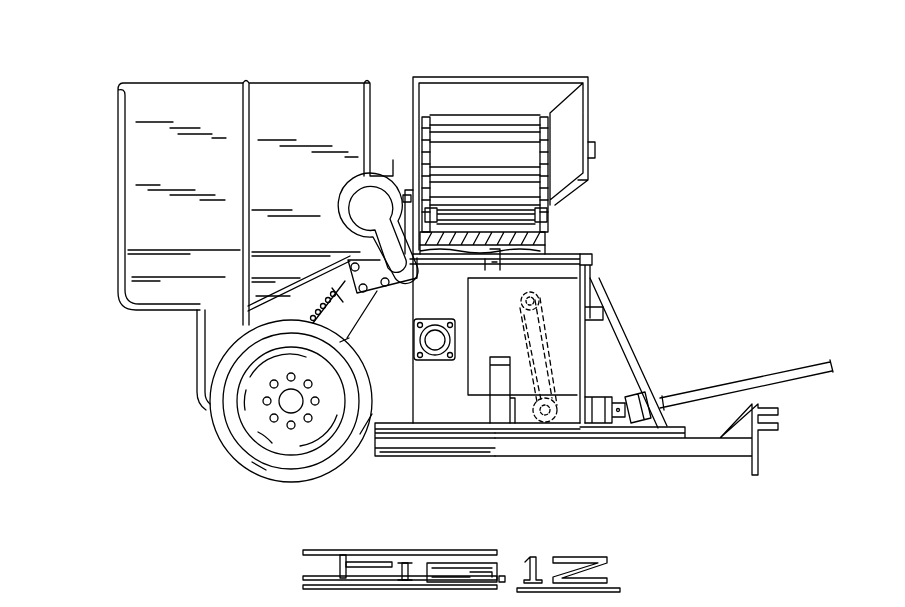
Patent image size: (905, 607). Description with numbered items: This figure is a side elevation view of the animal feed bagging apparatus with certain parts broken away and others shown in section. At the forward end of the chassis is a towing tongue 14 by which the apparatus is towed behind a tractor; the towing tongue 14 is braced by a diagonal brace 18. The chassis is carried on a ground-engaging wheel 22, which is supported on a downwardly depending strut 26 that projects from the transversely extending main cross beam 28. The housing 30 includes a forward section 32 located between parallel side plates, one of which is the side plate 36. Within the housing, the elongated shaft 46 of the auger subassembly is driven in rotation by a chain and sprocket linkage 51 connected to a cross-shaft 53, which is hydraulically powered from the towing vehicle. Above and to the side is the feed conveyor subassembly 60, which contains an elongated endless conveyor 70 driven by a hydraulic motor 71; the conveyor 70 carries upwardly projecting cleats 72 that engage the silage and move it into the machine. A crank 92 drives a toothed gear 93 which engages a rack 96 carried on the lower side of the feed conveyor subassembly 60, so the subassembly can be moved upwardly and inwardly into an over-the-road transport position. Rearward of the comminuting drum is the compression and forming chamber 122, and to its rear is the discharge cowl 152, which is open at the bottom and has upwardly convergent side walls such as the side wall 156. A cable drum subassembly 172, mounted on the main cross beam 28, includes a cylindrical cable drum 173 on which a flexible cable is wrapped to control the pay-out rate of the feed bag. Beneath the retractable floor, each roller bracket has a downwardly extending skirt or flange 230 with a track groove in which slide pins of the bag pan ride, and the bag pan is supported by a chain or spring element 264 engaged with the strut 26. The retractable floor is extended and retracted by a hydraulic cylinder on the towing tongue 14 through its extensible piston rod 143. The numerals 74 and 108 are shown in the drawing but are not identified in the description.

The housing 30 is at (213, 70).
The compression and forming chamber 122 is at (298, 100).
The side wall 156 is at (196, 170).
The discharge cowl 152 is at (158, 227).
The conveyor housing 74 is at (455, 105).
The conveyor 70 is at (489, 108).
The feed conveyor subassembly 60 is at (598, 80).
The cleats 72 is at (523, 162).
The hydraulic motor 71 is at (597, 152).
The cable drum subassembly 172 is at (346, 197).
The cable drum 173 is at (338, 223).
The chain or helical spring element 264 is at (330, 280).
The strut 26 is at (330, 297).
The main cross beam 28 is at (382, 285).
The rack 96 is at (506, 241).
The toothed gear 93 is at (490, 278).
The crank 92 is at (596, 290).
The shaft 46 is at (518, 301).
The chain and sprocket linkage 51 is at (527, 343).
The cross-shaft 53 is at (553, 382).
The diagonal brace 18 is at (612, 335).
The tongue 108 is at (800, 370).
The side plate 36 is at (428, 395).
The ground-engaging wheel 22 is at (240, 441).
The skirt or flange 230 is at (370, 450).
The piston rod 143 is at (440, 448).
The forward section 32 is at (462, 398).
The towing tongue 14 is at (690, 456).